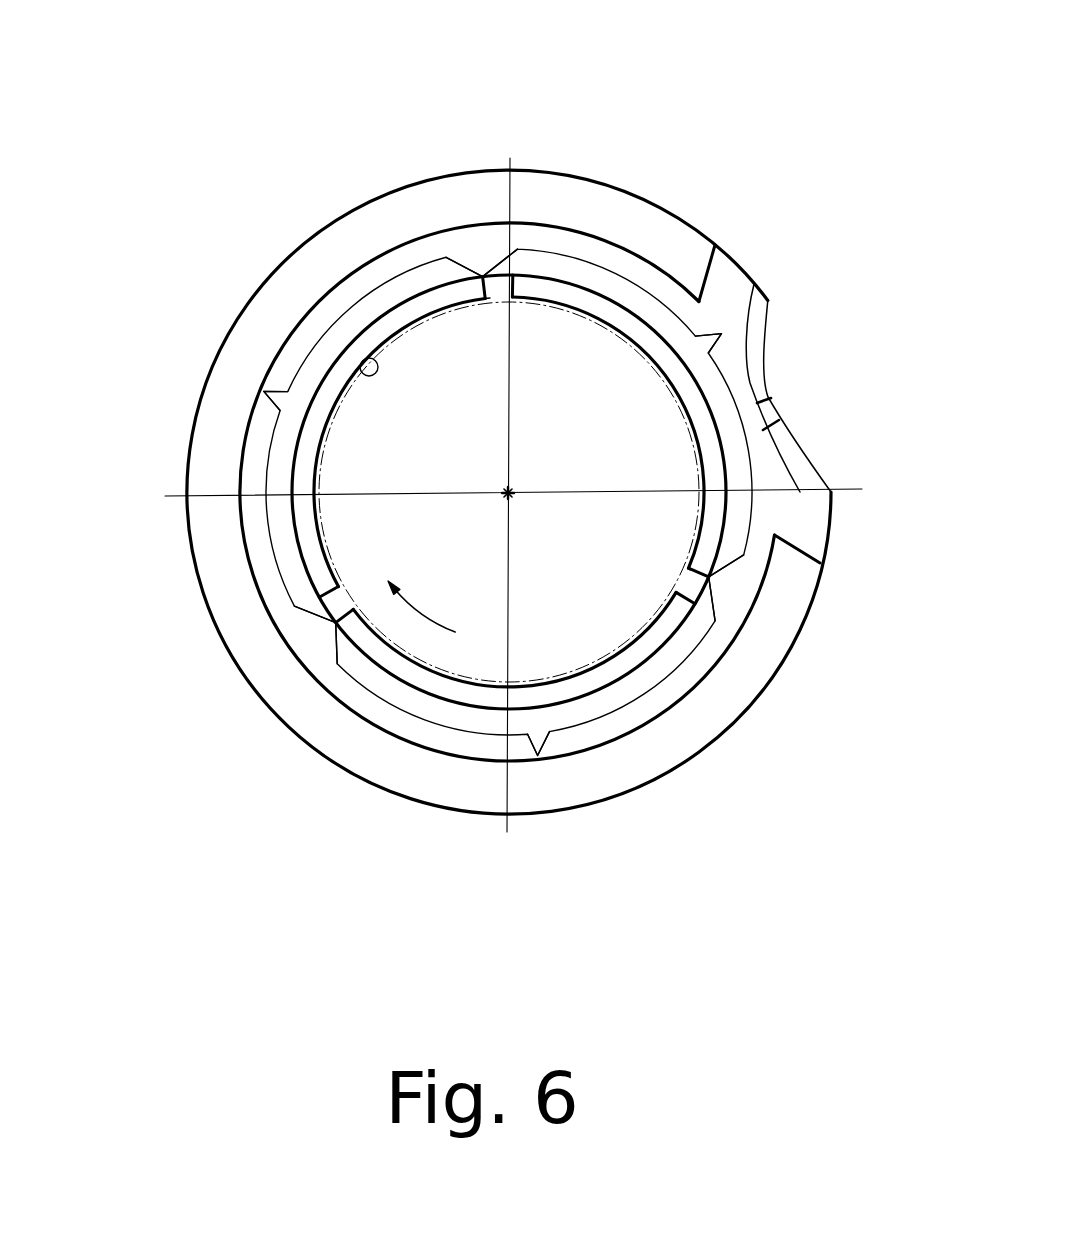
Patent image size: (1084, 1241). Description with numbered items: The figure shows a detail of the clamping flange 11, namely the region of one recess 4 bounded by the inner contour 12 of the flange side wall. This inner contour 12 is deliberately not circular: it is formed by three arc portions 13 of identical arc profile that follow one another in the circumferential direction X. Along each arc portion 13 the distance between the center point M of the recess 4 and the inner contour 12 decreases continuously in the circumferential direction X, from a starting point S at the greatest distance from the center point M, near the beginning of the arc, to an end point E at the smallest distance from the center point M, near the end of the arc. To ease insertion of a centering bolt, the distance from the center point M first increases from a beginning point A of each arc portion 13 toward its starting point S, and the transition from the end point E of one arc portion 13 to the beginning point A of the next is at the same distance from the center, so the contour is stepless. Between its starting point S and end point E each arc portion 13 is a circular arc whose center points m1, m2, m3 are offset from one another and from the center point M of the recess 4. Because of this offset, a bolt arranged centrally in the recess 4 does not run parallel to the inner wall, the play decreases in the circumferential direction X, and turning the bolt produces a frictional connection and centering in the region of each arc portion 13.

The recess 4 is at (715, 572).
The clamping flange 11 is at (357, 705).
The inner contour 12 is at (356, 378).
The arc portion 13 is at (264, 392).
The starting point S is at (513, 275).
The beginning point A is at (489, 297).
The end point E is at (470, 270).
The center point M is at (513, 497).
The circumferential direction X is at (421, 606).
The center point of circular arc portion m1 is at (508, 492).
The center point of circular arc portion m2 is at (510, 493).
The center point of circular arc portion m3 is at (508, 493).